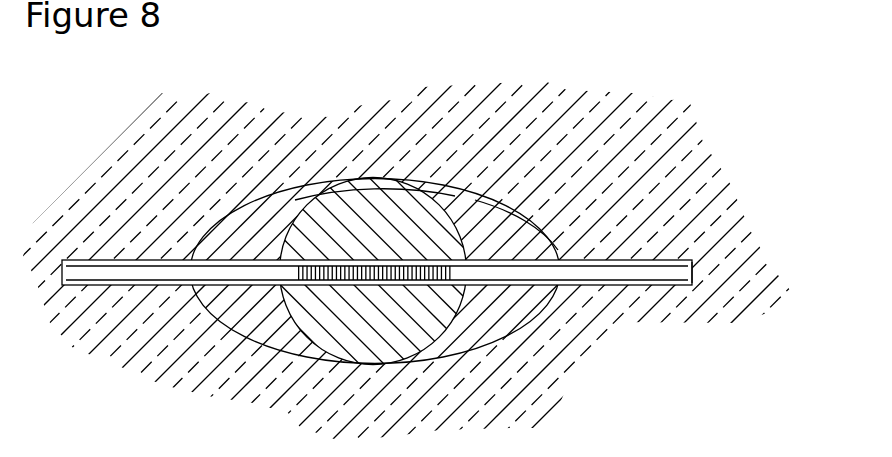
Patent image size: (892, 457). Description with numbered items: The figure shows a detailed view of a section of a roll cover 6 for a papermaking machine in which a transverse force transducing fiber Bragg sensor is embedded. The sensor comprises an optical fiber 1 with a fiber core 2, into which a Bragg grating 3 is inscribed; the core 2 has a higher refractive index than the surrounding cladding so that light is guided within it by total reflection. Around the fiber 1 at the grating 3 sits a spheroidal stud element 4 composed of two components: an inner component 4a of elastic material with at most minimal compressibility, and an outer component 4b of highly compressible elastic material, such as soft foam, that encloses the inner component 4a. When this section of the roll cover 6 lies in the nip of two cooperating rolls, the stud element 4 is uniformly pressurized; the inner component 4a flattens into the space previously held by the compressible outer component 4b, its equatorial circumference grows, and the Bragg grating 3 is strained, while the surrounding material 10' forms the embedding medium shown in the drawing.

The optical fiber 1 is at (611, 257).
The fiber core 2 is at (693, 271).
The Bragg grating 3 is at (447, 357).
The stud element 4 is at (313, 170).
The inner component 4a is at (384, 180).
The outer component 4b is at (513, 208).
The roll cover 6 is at (650, 120).
The substrate 10' is at (446, 228).